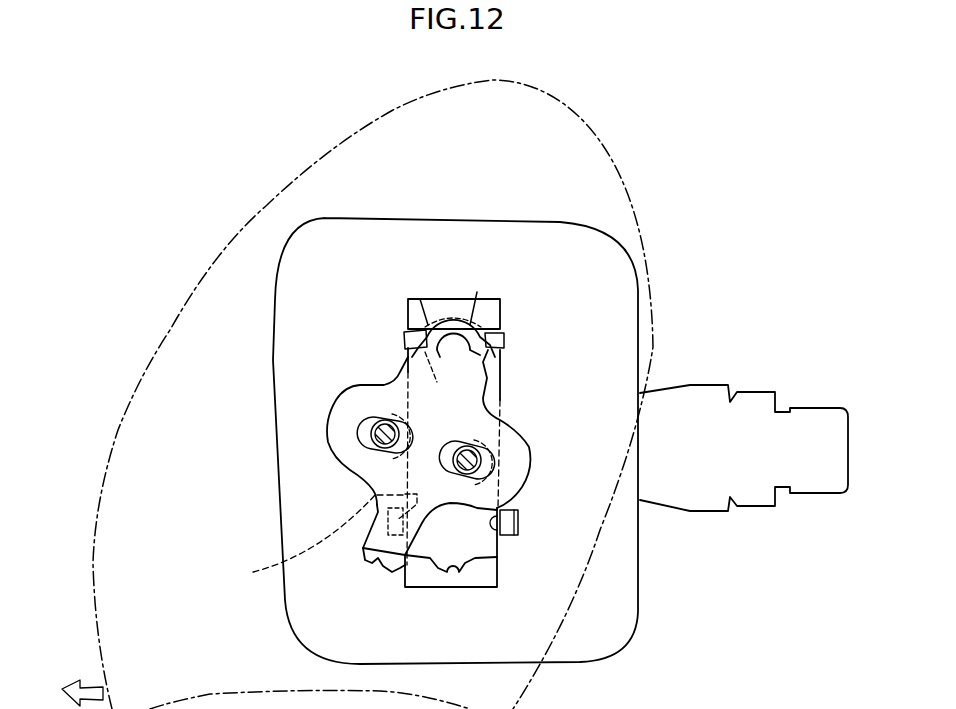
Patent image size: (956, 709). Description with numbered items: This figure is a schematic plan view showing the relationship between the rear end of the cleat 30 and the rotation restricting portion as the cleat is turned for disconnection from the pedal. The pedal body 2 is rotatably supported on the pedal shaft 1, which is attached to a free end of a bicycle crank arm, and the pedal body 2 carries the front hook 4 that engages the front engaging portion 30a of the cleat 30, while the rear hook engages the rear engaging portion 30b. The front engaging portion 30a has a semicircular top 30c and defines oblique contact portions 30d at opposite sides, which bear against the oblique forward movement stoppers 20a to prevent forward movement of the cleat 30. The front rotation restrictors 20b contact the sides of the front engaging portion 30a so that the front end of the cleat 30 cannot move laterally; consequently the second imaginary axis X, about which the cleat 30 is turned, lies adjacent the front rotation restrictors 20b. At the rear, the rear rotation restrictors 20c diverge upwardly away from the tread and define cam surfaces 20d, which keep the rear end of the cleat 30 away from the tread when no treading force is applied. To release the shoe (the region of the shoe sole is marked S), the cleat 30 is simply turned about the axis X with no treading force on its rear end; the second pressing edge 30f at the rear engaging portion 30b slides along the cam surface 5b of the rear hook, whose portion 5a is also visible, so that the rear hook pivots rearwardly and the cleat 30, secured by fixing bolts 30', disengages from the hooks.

The pedal shaft 1 is at (814, 408).
The pedal body 2 is at (628, 623).
The hook 4 is at (500, 315).
The rear clamping member portion 5a is at (488, 580).
The cam surface 5b is at (440, 573).
The forward movement stopper 20a is at (408, 358).
The rotation restrictor 20b is at (420, 299).
The rear rotation restrictor 20c is at (269, 544).
The cam surface 20d is at (497, 545).
The cleat 30 is at (370, 456).
The cleat fixing bolts 30' is at (405, 454).
The front engaging portion 30a is at (455, 312).
The rear engaging portion 30b is at (367, 565).
The semicircular top 30c is at (477, 292).
The oblique contact portion 30d is at (408, 328).
The second pressing edge 30f is at (392, 573).
The shoe sole S is at (200, 283).
The second imaginary axis X is at (435, 384).